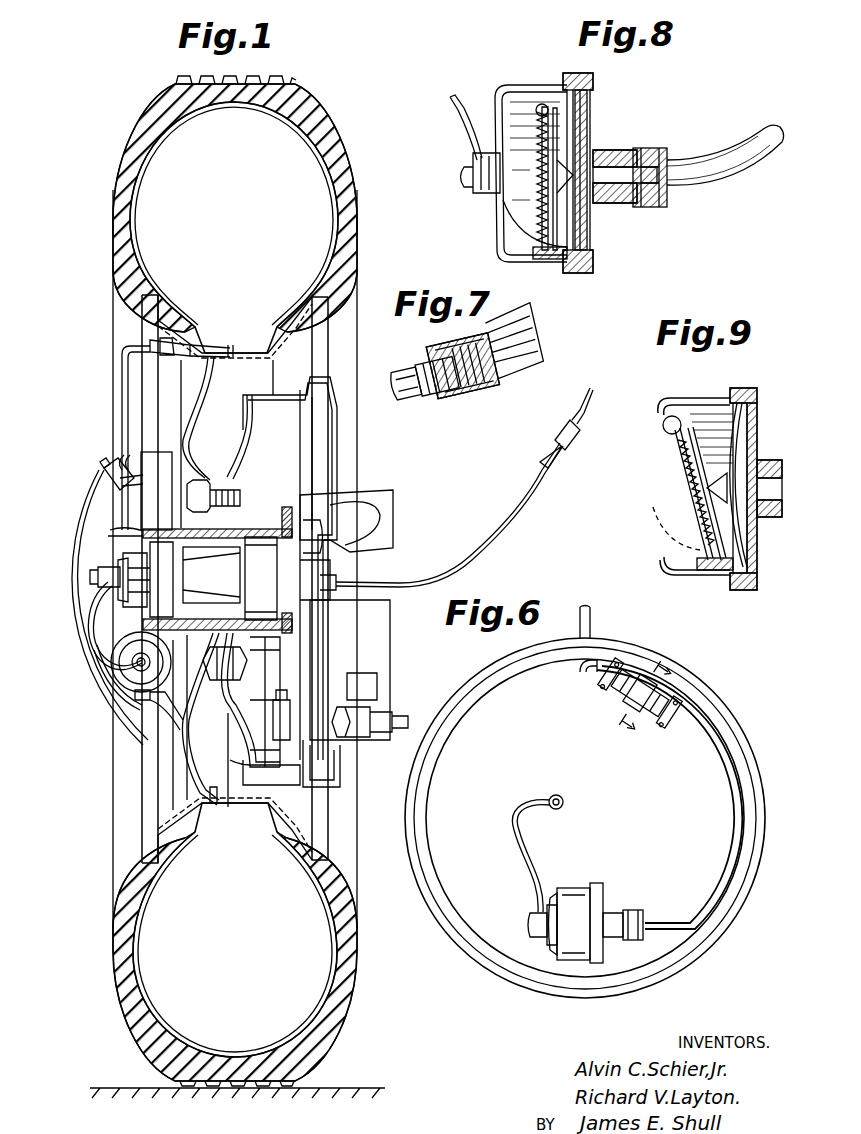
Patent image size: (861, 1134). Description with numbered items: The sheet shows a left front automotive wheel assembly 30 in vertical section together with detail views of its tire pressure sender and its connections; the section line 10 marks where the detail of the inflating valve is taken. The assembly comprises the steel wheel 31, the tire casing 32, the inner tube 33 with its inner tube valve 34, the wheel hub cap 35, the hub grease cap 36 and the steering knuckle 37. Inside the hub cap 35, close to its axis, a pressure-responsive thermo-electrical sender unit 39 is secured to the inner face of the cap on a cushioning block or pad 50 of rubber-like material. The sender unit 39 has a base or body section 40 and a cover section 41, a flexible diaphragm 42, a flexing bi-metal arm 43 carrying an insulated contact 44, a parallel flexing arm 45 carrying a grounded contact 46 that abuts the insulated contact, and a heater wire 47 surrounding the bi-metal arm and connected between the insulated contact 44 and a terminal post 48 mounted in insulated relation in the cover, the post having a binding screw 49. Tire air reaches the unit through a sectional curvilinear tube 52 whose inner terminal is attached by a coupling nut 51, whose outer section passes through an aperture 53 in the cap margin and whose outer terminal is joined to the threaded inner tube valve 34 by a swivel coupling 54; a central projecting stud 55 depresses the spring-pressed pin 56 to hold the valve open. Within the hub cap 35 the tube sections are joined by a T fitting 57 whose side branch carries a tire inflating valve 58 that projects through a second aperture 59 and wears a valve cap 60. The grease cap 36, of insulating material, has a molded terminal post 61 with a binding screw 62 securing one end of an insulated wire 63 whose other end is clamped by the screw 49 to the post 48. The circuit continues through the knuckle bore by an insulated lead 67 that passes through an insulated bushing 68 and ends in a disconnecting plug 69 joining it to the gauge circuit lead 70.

In FIG. 6, the section line 10- 10 is at (676, 694).
In FIG. 1, the automotive vehicle left front wheel assembly 30 is at (122, 122).
In FIG. 1, the steel wheel 31 is at (140, 312).
In FIG. 1, the tire casing 32 is at (113, 200).
In FIG. 1, the inner tube 33 is at (136, 223).
In FIG. 1, the inner tube valve 34 is at (185, 357).
In FIG. 7, the inner tube valve 34 is at (518, 350).
In FIG. 1, the wheel hub cap 35 is at (98, 504).
In FIG. 6, the wheel hub cap 35 is at (458, 924).
In FIG. 1, the hub grease cap 36 is at (108, 532).
In FIG. 1, the steering knuckle 37 is at (207, 577).
In FIG. 1, the thermo-electrical control or sender unit 39 is at (195, 702).
In FIG. 8, the thermo-electrical control or sender unit 39 is at (597, 158).
In FIG. 9, the thermo-electrical control or sender unit 39 is at (713, 482).
In FIG. 6, the thermo-electrical control or sender unit 39 is at (563, 915).
In FIG. 8, the base or body section 40 is at (594, 236).
In FIG. 9, the base or body section 40 is at (757, 557).
In FIG. 6, the base or body section 40 is at (600, 894).
In FIG. 1, the cover section 41 is at (138, 680).
In FIG. 8, the cover section 41 is at (497, 240).
In FIG. 9, the cover section 41 is at (668, 574).
In FIG. 6, the cover section 41 is at (566, 890).
In FIG. 8, the flexible diaphragm 42 is at (582, 106).
In FIG. 9, the flexible diaphragm 42 is at (750, 440).
In FIG. 8, the flexing bi-metal arm 43 is at (500, 259).
In FIG. 9, the flexing bi-metal arm 43 is at (698, 552).
In FIG. 8, the insulated contact 44 is at (546, 104).
In FIG. 9, the insulated contact 44 is at (716, 440).
In FIG. 8, the parallel flexing arm 45 is at (574, 242).
In FIG. 9, the parallel flexing arm 45 is at (728, 535).
In FIG. 8, the grounded contact 46 is at (558, 120).
In FIG. 9, the grounded contact 46 is at (690, 426).
In FIG. 8, the heater wire 47 is at (535, 145).
In FIG. 9, the heater wire 47 is at (678, 474).
In FIG. 8, the sender unit terminal post 48 is at (478, 192).
In FIG. 6, the sender unit terminal post 48 is at (545, 947).
In FIG. 1, the binding or clamping screw 49 is at (135, 698).
In FIG. 8, the binding or clamping screw 49 is at (462, 184).
In FIG. 6, the binding or clamping screw 49 is at (530, 924).
In FIG. 1, the shock absorbing or insulating block or pad 50 is at (98, 654).
In FIG. 8, the coupling nut 51 is at (658, 152).
In FIG. 6, the coupling nut 51 is at (636, 914).
In FIG. 1, the tire air pressure conducting tube or pipe 52 is at (122, 394).
In FIG. 8, the tire air pressure conducting tube or pipe 52 is at (732, 178).
In FIG. 7, the tire air pressure conducting tube or pipe 52 is at (403, 392).
In FIG. 6, the tire air pressure conducting tube or pipe 52 is at (592, 624).
In FIG. 1, the aperture 53 is at (122, 462).
In FIG. 6, the aperture 53 is at (582, 670).
In FIG. 1, the swivel coupling 54 is at (150, 344).
In FIG. 7, the swivel coupling 54 is at (442, 347).
In FIG. 7, the central projecting stud 55 is at (433, 395).
In FIG. 7, the spring-pressed pin 56 is at (482, 398).
In FIG. 1, the T fitting 57 is at (135, 480).
In FIG. 6, the T fitting 57 is at (632, 703).
In FIG. 1, the tire inflating valve 58 is at (118, 487).
In FIG. 6, the tire inflating valve 58 is at (606, 677).
In FIG. 6, the aperture 59 is at (682, 693).
In FIG. 1, the valve cap 60 is at (102, 468).
In FIG. 1, the terminal post 61 is at (118, 564).
In FIG. 1, the binding or clamping screw 62 is at (92, 582).
In FIG. 1, the insulated conductor or wire 63 is at (86, 612).
In FIG. 8, the insulated conductor or wire 63 is at (462, 132).
In FIG. 6, the insulated conductor or wire 63 is at (516, 848).
In FIG. 1, the insulated conductor or lead 67 is at (458, 562).
In FIG. 1, the insulated bushing 68 is at (332, 586).
In FIG. 1, the disconnecting plug 69 is at (548, 446).
In FIG. 1, the insulated conductor or lead 70 is at (573, 417).